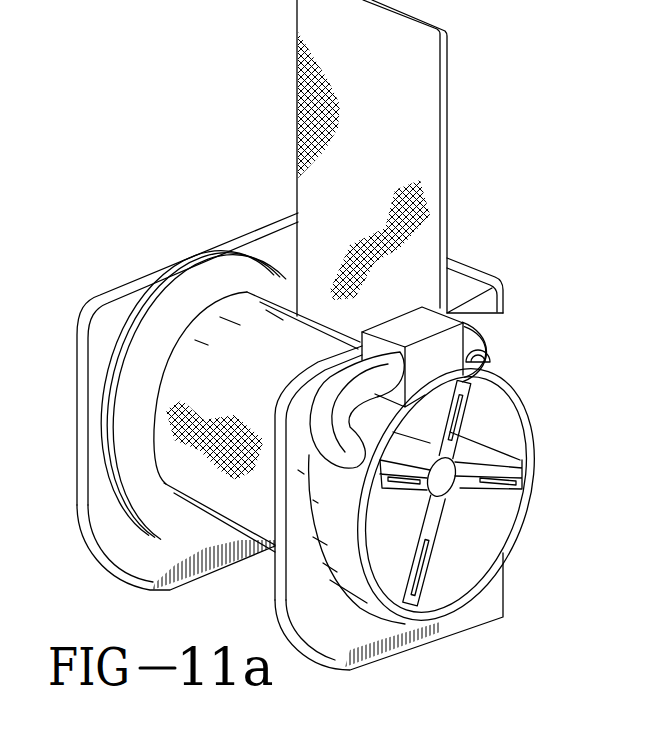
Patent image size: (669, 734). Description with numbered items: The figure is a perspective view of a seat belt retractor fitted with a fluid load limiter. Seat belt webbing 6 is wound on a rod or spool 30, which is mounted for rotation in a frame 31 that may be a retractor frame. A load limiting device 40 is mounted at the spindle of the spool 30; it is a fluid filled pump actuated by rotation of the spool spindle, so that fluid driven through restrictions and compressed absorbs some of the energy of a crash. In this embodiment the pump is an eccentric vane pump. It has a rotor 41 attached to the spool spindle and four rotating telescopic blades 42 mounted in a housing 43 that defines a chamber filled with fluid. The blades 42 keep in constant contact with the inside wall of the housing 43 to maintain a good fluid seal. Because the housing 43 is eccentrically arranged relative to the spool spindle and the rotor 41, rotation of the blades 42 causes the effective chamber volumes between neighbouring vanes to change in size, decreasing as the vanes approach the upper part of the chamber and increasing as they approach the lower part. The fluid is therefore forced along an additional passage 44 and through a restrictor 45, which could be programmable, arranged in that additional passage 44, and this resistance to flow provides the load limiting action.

The seat belt webbing 6 is at (417, 100).
The spool 30 is at (133, 437).
The frame 31 is at (117, 322).
The load limiting device 40 is at (542, 392).
The rotor 41 is at (445, 480).
The rotating telescopic blades 42 is at (420, 587).
The housing 43 is at (483, 572).
The additional passage 44 is at (498, 340).
The restrictor 45 is at (405, 325).